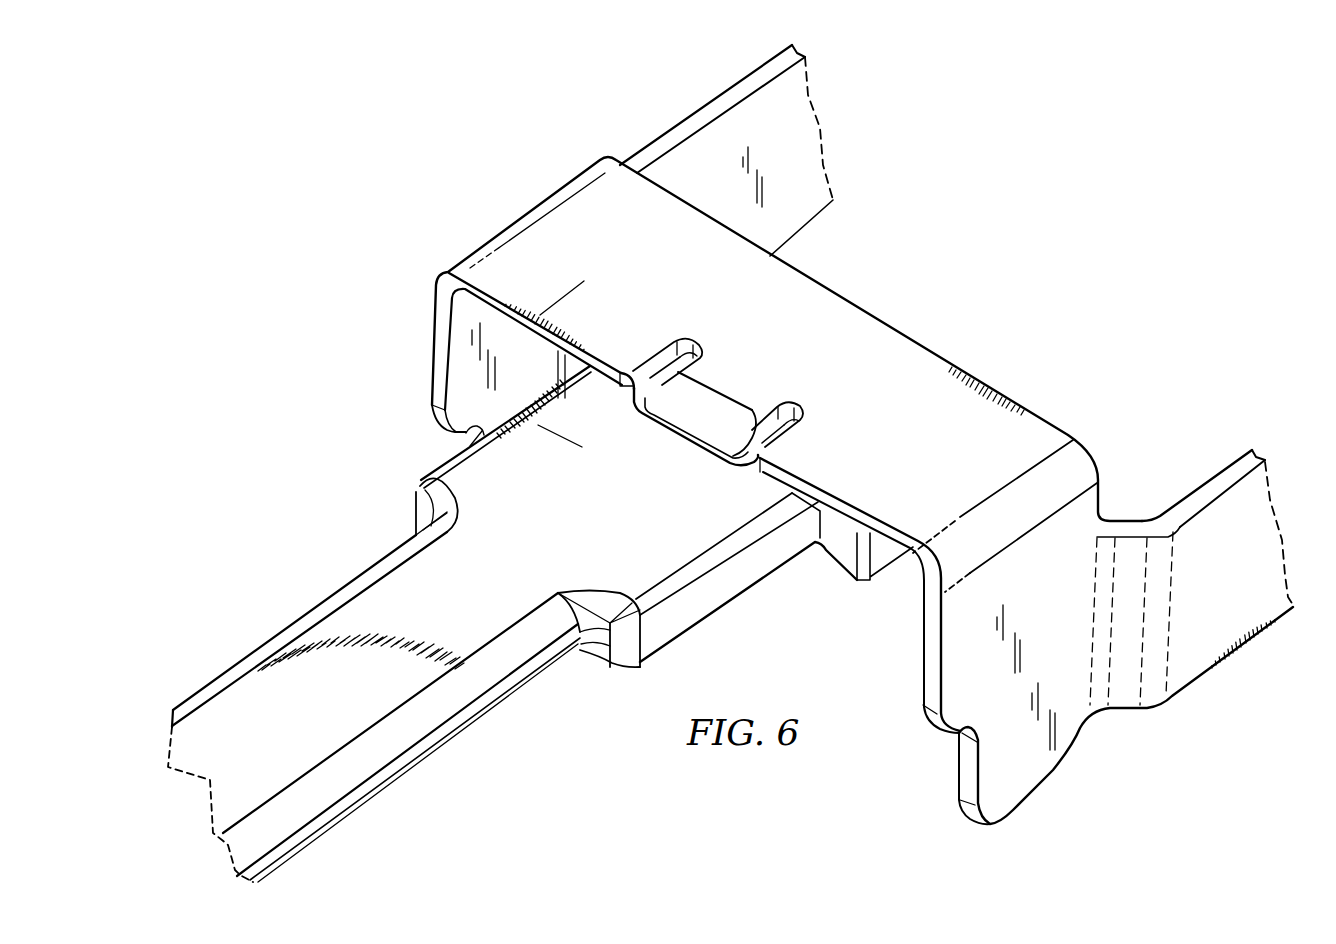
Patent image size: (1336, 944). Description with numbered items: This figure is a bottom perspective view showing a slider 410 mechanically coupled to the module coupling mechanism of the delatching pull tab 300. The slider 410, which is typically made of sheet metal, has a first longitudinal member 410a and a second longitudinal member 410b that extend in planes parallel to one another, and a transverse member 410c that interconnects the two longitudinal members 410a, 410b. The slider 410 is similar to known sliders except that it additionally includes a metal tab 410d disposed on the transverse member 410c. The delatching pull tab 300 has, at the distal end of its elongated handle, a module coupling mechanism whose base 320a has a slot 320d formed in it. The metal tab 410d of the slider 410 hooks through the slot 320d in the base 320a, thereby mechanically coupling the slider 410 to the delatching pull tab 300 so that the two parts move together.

The delatching pull tab 300 is at (373, 523).
The base 320a is at (721, 583).
The slot 320d is at (648, 386).
The slider 410 is at (862, 434).
The first longitudinal member 410a is at (814, 203).
The second longitudinal member 410b is at (1205, 492).
The transverse member 410c is at (863, 335).
The metal tab 410d is at (707, 410).